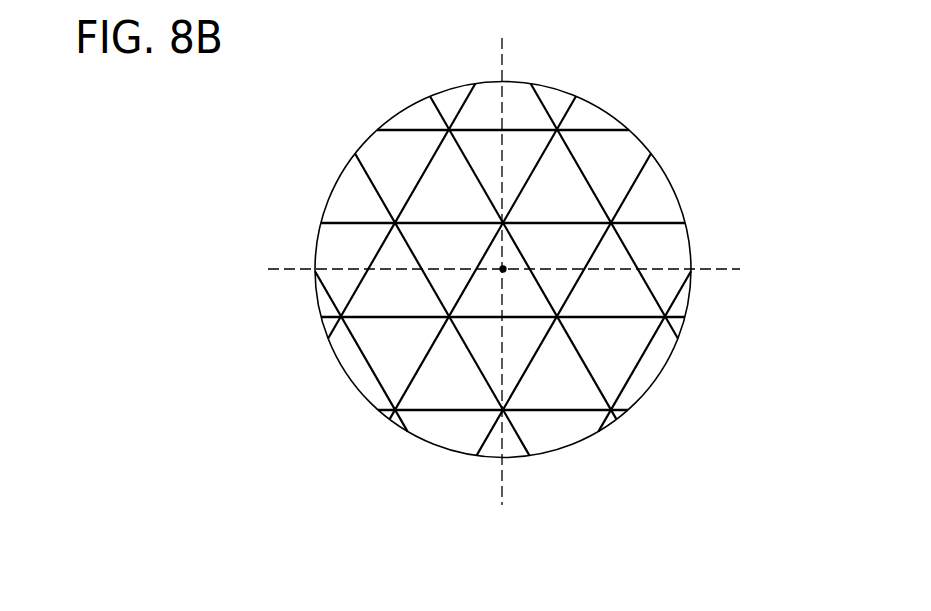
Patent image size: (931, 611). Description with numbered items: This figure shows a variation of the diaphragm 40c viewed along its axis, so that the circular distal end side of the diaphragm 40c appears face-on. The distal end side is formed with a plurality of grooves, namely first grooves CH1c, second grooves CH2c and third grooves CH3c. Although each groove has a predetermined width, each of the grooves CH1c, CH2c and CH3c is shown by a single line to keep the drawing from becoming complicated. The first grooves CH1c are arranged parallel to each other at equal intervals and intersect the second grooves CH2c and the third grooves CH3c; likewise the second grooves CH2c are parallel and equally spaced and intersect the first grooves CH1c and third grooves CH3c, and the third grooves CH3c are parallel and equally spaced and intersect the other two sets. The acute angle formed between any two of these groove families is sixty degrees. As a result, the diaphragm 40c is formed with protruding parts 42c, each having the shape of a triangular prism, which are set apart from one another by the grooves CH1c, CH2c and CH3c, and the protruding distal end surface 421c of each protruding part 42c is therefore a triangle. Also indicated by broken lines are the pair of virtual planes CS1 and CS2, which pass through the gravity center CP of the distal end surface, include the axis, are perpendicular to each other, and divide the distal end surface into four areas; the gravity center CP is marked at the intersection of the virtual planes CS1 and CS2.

The diaphragm 40c is at (752, 103).
The protruding part 42c is at (634, 145).
The protruding distal end surface 421c is at (627, 343).
The first groove CH1c is at (544, 104).
The second groove CH2c is at (641, 174).
The third groove CH3c is at (664, 221).
The virtual plane CS1 is at (722, 268).
The virtual plane CS2 is at (500, 62).
The gravity center CP is at (503, 268).